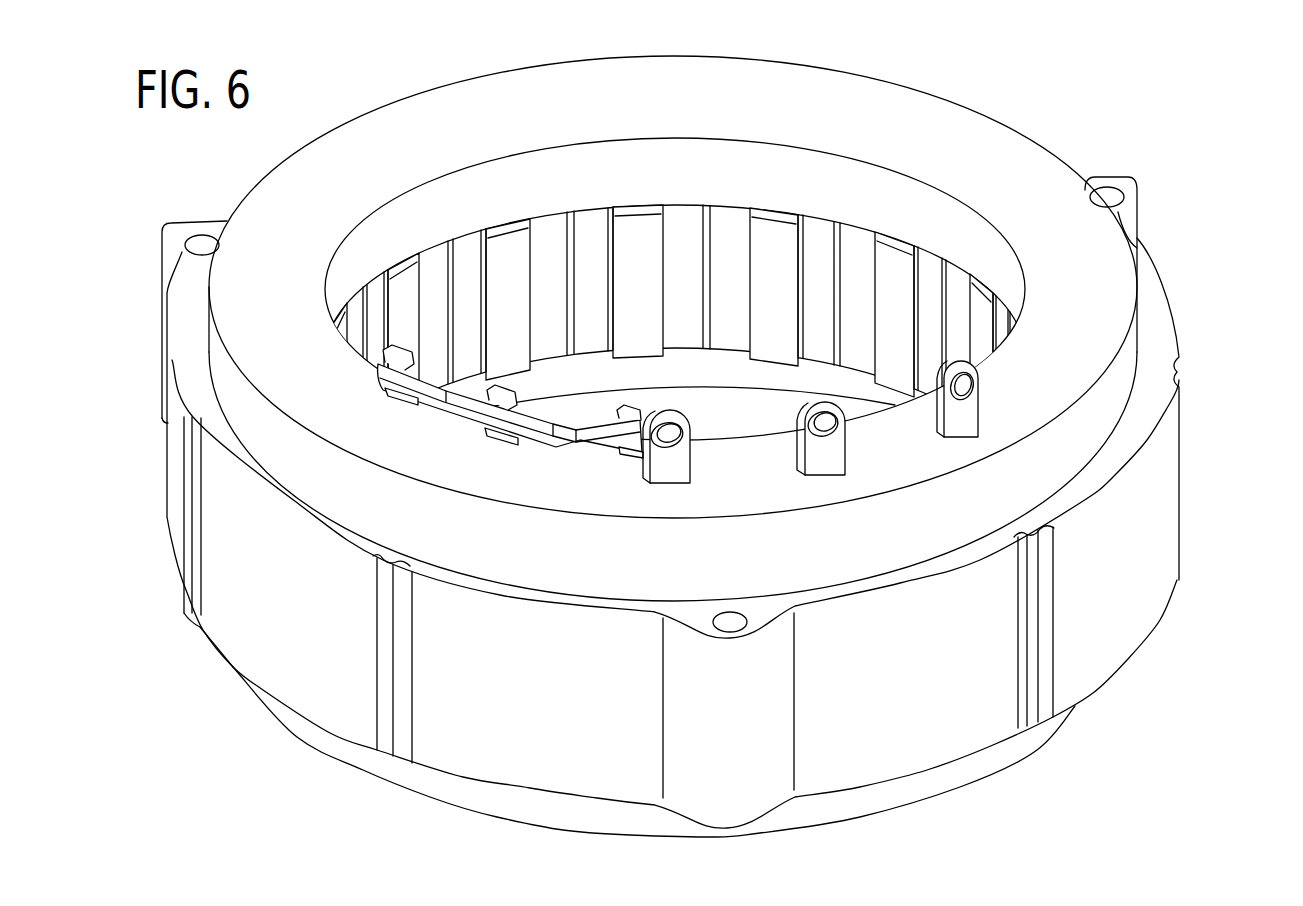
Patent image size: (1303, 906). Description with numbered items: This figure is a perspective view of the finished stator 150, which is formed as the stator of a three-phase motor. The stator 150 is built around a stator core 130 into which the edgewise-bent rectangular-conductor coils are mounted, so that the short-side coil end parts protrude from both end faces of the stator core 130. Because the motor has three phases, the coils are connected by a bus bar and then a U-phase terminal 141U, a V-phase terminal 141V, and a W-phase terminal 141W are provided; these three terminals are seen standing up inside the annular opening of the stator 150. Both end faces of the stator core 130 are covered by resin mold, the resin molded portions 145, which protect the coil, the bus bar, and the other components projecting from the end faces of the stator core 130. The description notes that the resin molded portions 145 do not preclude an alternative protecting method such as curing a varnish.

The stator core 130 is at (1172, 277).
The resin molded portions 145 is at (1040, 165).
The stator 150 is at (1150, 152).
The U-phase terminal 141U is at (667, 468).
The V-phase terminal 141V is at (823, 460).
The W-phase terminal 141W is at (957, 420).